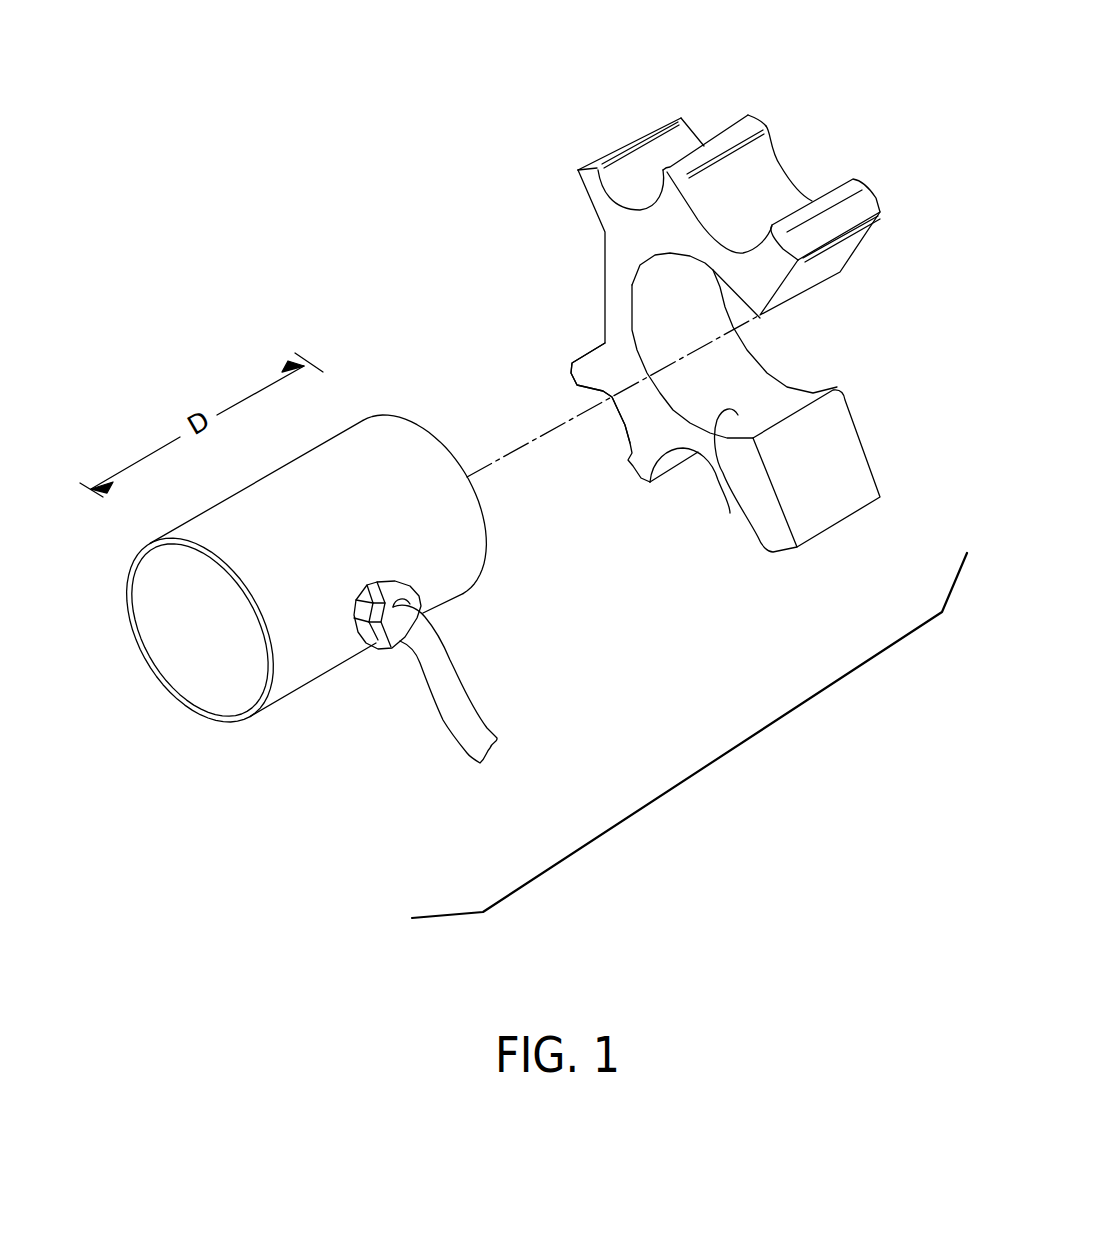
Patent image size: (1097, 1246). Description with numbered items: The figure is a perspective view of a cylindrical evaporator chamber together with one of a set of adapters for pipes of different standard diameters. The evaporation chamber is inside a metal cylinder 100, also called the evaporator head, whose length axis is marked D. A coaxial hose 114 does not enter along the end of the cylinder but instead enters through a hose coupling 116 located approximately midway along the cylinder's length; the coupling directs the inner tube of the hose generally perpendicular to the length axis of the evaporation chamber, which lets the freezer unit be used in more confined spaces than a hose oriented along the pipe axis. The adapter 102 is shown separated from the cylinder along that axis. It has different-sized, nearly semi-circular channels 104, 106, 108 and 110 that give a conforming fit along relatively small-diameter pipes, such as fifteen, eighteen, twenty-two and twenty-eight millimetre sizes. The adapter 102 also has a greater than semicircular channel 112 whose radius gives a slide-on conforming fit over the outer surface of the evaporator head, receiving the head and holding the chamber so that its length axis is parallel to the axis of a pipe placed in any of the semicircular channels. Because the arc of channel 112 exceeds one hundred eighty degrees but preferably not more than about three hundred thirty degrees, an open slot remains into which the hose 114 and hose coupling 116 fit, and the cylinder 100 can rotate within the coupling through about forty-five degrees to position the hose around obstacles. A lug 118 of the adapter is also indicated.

The metal cylinder 100 is at (303, 692).
The adapter 102 is at (694, 318).
The semi-circular channel 104 is at (765, 200).
The semi-circular channel 106 is at (685, 142).
The semi-circular channel 108 is at (625, 424).
The semi-circular channel 110 is at (668, 460).
The greater than semicircular channel 112 is at (730, 513).
The coaxial hose 114 is at (455, 718).
The hose coupling 116 is at (385, 645).
The lug 118 is at (788, 333).